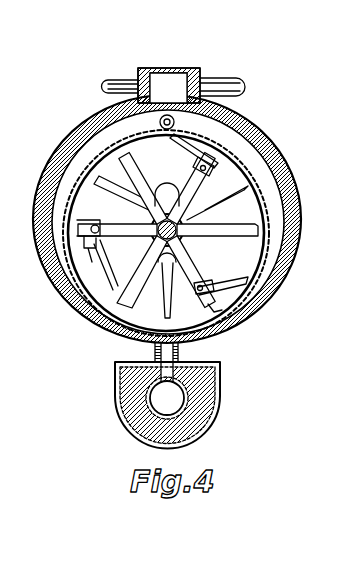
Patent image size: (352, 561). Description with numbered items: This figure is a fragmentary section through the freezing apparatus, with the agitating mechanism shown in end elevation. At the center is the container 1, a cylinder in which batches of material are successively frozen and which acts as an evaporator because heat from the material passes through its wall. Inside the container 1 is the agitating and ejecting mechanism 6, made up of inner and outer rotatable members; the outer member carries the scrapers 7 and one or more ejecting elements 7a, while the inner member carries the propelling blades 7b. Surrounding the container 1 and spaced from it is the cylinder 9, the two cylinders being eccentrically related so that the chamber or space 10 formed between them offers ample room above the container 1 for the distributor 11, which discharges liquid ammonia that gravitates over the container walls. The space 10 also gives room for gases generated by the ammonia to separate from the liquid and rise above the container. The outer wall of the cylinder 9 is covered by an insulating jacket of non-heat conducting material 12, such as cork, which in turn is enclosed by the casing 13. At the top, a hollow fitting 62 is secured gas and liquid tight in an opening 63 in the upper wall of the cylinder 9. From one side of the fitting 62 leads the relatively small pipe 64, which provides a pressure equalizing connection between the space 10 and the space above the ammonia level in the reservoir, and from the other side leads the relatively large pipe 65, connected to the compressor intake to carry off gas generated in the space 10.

The container 1 is at (112, 292).
The agitating and ejecting mechanism 6 is at (168, 231).
The scrapers 7 is at (170, 146).
The ejecting elements 7a is at (252, 198).
The propelling blades 7b is at (155, 263).
The cylinder 9 is at (71, 171).
The chamber or space 10 is at (272, 150).
The distributor 11 is at (159, 124).
The jacket of non-heat conducting material 12 is at (82, 120).
The casing 13 is at (46, 161).
The hollow fitting 62 is at (190, 66).
The opening 63 is at (192, 105).
The pipe 64 is at (126, 80).
The pipe 65 is at (234, 80).